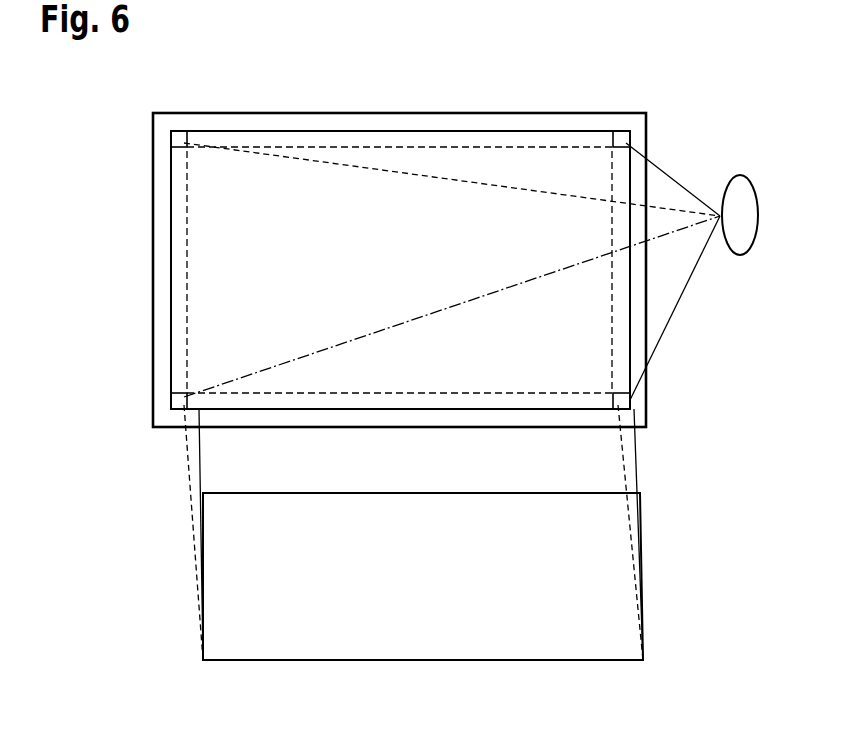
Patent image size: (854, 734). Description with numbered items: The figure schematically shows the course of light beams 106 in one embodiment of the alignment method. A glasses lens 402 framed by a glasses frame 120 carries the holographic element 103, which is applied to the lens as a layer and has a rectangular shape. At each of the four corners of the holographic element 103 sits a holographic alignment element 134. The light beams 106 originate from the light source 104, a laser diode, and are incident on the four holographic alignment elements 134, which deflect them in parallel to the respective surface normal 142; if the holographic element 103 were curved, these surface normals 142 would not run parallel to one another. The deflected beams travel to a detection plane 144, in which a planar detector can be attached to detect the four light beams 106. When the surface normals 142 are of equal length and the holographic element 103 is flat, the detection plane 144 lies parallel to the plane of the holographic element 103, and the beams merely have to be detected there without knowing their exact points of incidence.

The holographic element 103 is at (222, 200).
The light source 104 is at (742, 248).
The light beam 106 is at (662, 318).
The glasses frame 120 is at (153, 298).
The holographic alignment elements 134 is at (176, 133).
The surface normal 142 is at (203, 460).
The detection plane 144 is at (243, 612).
The glasses lens 402 is at (171, 250).